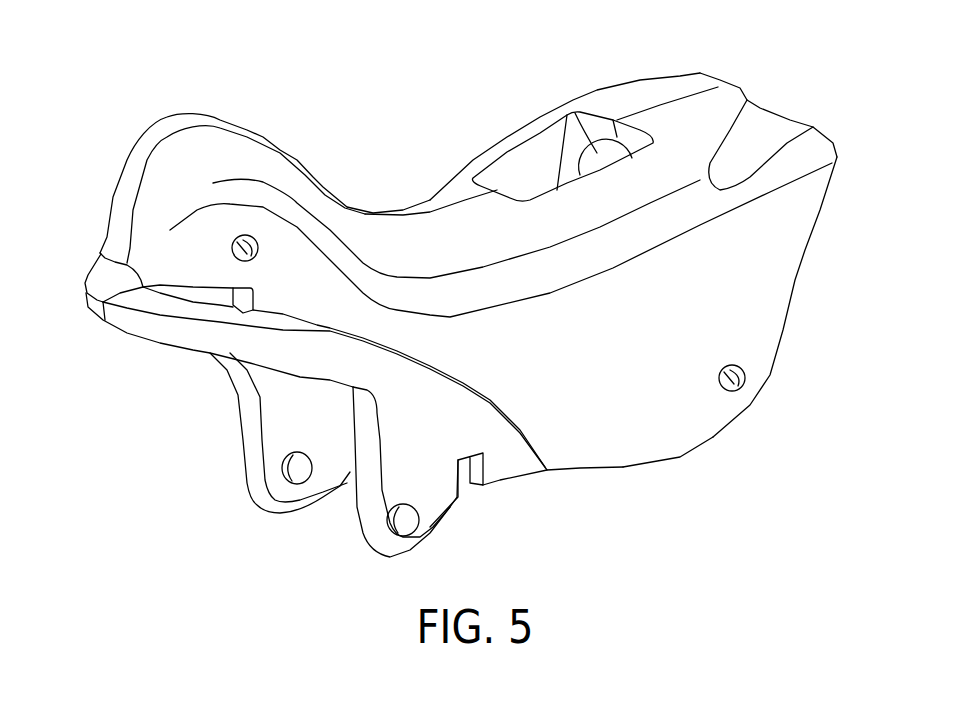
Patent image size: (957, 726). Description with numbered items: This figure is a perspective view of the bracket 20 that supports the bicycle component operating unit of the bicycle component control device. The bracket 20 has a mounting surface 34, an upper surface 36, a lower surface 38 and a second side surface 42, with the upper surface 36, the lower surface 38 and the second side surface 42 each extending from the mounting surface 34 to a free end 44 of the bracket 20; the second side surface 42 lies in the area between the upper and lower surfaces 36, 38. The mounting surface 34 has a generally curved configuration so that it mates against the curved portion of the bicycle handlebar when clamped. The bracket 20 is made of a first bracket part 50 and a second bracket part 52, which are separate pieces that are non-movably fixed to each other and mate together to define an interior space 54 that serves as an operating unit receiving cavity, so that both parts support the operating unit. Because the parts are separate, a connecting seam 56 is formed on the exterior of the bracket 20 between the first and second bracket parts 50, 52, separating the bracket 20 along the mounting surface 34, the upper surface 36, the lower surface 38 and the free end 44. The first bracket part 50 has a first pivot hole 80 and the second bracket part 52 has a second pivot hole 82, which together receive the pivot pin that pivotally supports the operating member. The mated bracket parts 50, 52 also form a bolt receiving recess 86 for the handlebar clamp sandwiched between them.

The bracket 20 is at (262, 62).
The first bracket part 50 is at (162, 117).
The second bracket part 52 is at (227, 142).
The free end 44 is at (120, 212).
The connecting seam 56 is at (421, 210).
The bolt receiving recess 86 is at (577, 112).
The upper surface 36 is at (690, 118).
The mounting surface 34 is at (795, 280).
The second side surface 42 is at (660, 383).
The lower surface 38 is at (623, 468).
The interior space 54 is at (292, 410).
The first pivot hole 80 is at (299, 474).
The second pivot hole 82 is at (407, 521).